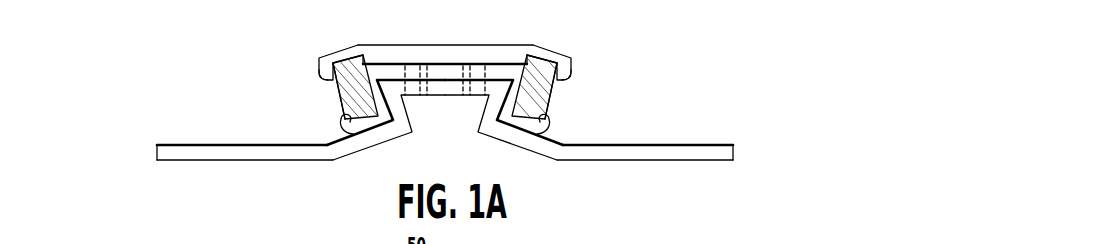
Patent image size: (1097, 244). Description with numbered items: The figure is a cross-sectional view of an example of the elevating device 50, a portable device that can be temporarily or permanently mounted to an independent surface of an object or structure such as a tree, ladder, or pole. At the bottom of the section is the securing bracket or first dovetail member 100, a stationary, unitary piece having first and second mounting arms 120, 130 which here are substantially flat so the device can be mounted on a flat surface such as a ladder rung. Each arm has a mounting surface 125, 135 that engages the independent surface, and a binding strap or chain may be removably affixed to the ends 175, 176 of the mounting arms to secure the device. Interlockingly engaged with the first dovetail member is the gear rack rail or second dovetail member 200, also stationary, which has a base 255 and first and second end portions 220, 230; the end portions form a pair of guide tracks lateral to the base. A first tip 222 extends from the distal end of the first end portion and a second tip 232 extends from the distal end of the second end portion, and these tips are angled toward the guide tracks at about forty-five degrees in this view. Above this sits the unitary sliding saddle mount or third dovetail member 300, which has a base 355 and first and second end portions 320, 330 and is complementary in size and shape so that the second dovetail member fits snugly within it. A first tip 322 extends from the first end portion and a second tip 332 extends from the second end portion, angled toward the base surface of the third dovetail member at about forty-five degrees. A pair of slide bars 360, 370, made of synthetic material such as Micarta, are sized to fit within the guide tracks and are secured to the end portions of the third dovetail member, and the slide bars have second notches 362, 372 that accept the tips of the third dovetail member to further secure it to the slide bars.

The elevating device 50 is at (716, 74).
The first dovetail member 100 is at (745, 166).
The first mounting arm 120 is at (253, 153).
The mounting surface 125 is at (187, 161).
The second mounting arm 130 is at (660, 161).
The mounting surface 135 is at (697, 161).
The end of mounting arm 175 is at (157, 151).
The end of mounting arm 176 is at (735, 152).
The second dovetail member 200 is at (565, 142).
The first end portion 220 is at (362, 137).
The first tip 222 is at (342, 119).
The second end portion 230 is at (500, 143).
The second tip 232 is at (552, 115).
The base 255 is at (434, 72).
The third dovetail member 300 is at (571, 47).
The first end portion 320 is at (340, 58).
The first tip 322 is at (319, 75).
The second end portion 330 is at (548, 57).
The second tip 332 is at (566, 78).
The base 355 is at (477, 58).
The slide bar 360 is at (355, 72).
The second notch 362 is at (335, 86).
The slide bar 370 is at (572, 61).
The second notch 372 is at (562, 88).